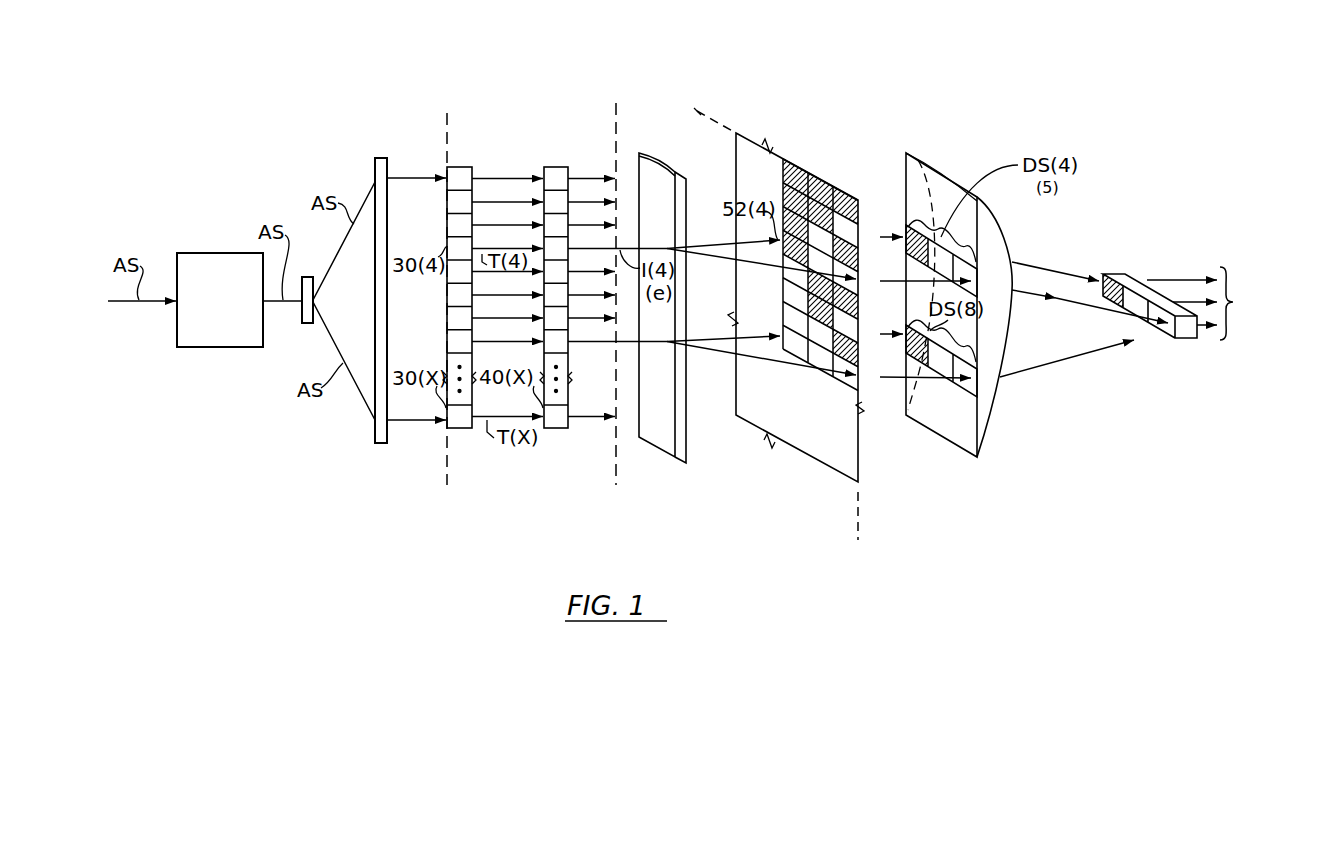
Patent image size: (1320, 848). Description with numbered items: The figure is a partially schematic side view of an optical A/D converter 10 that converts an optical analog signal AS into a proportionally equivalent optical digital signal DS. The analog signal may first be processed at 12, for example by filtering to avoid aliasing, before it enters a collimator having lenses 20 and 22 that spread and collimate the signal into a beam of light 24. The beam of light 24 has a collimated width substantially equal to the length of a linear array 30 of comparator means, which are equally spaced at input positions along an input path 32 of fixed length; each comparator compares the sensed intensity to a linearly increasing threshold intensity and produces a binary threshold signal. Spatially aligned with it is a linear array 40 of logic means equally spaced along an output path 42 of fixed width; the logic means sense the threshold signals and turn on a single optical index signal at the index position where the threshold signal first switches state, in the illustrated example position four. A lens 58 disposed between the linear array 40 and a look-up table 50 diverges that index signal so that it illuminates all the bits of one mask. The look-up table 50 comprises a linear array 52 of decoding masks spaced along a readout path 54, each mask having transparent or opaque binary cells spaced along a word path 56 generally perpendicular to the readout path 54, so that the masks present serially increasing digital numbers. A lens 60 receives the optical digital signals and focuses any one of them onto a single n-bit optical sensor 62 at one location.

The A/D converter 10 is at (931, 69).
The processing stage 12 is at (210, 348).
The collimator lens 20 is at (310, 324).
The collimator lens 22 is at (377, 444).
The beam of light 24 is at (402, 176).
The linear array of comparator means 30 is at (462, 165).
The input path 32 is at (450, 113).
The linear array of logic means 40 is at (555, 165).
The output path 42 is at (619, 110).
The look-up table 50 is at (811, 462).
The linear array of decoding means 52 is at (834, 172).
The readout path 54 is at (861, 527).
The word path 56 is at (712, 101).
The lens 58 is at (690, 452).
The lens 60 is at (934, 165).
The n-bit optical sensor 62 is at (1131, 276).